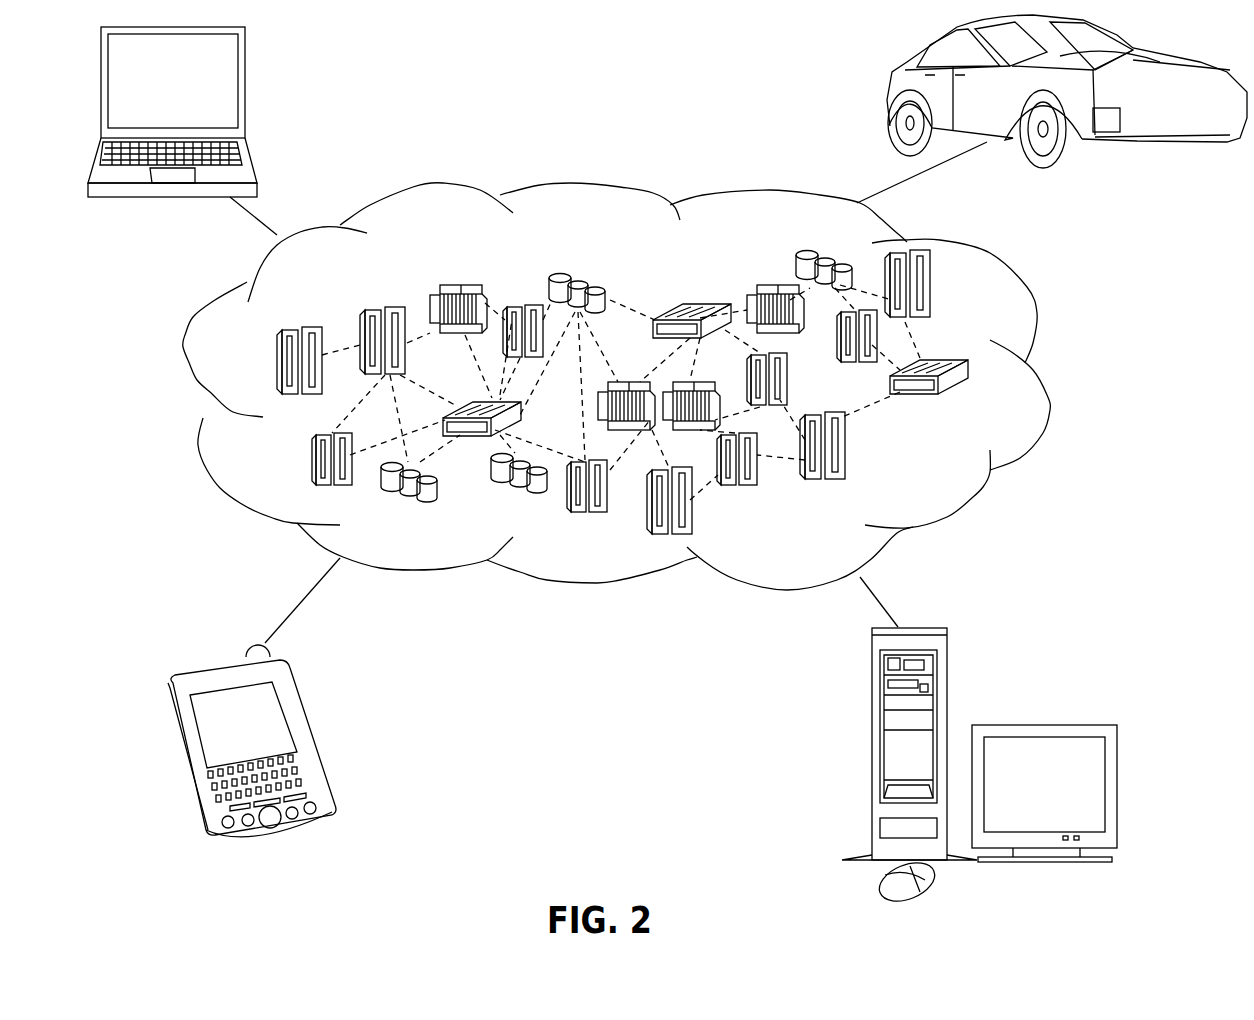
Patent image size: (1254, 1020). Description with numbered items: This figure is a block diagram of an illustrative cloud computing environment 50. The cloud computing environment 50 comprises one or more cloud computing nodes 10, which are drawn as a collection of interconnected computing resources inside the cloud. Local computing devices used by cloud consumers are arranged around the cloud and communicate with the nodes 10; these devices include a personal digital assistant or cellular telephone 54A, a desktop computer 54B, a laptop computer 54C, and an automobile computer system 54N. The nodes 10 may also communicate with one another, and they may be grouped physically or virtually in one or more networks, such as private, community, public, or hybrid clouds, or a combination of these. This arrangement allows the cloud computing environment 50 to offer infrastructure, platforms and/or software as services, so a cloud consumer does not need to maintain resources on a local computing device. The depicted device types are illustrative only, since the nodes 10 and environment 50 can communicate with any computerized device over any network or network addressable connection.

The cloud computing node 10 is at (950, 478).
The cloud computing environment 50 is at (1037, 373).
The personal digital assistant or cellular telephone 54A is at (302, 705).
The desktop computer 54B is at (870, 689).
The laptop computer 54C is at (245, 68).
The automobile computer system 54N is at (890, 83).